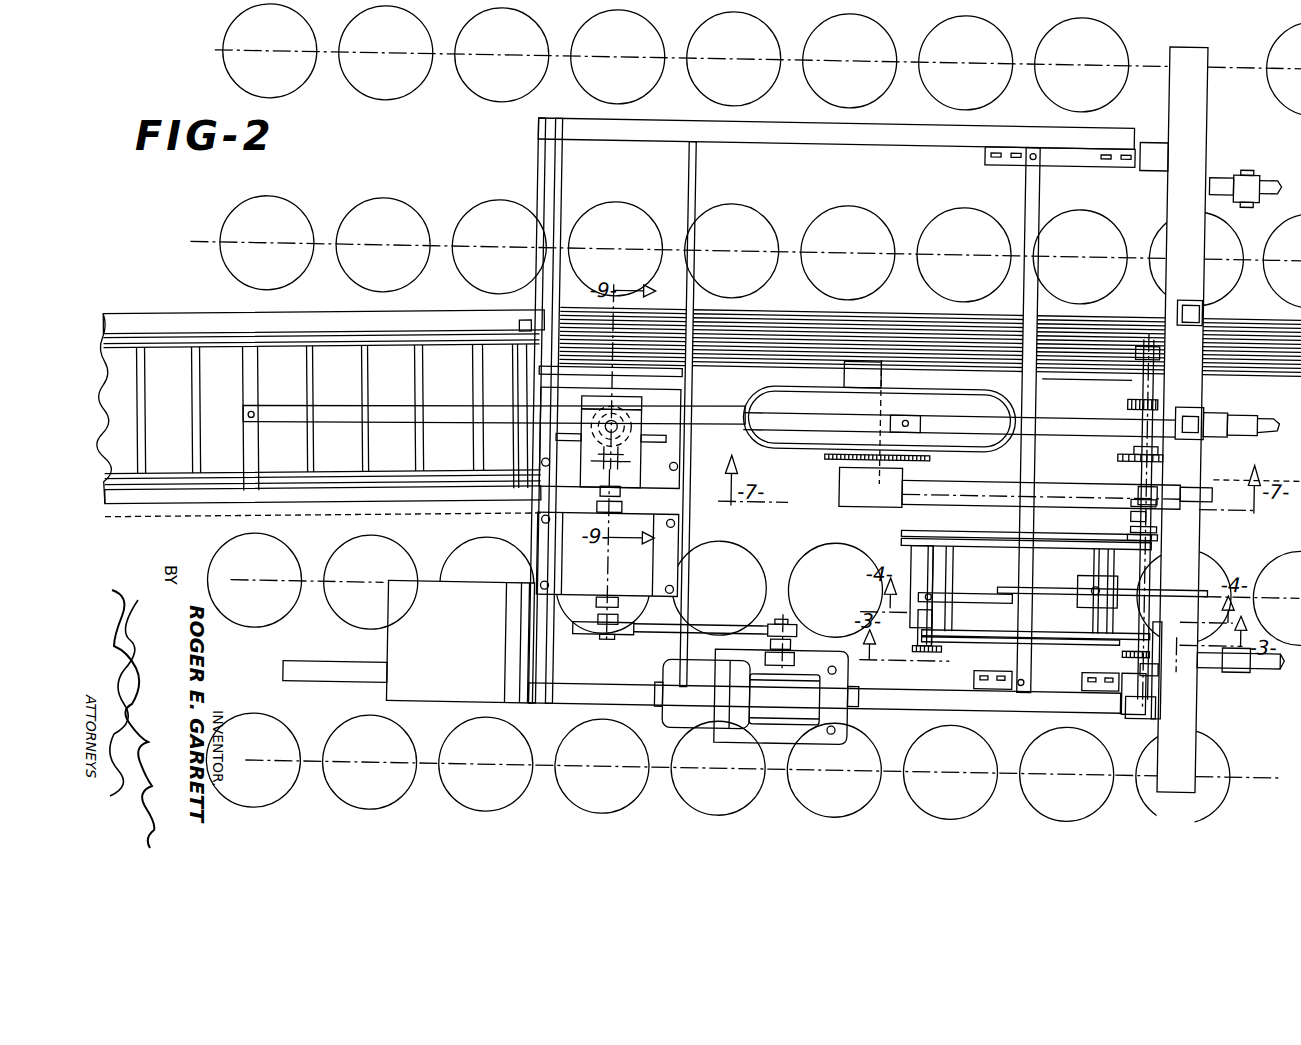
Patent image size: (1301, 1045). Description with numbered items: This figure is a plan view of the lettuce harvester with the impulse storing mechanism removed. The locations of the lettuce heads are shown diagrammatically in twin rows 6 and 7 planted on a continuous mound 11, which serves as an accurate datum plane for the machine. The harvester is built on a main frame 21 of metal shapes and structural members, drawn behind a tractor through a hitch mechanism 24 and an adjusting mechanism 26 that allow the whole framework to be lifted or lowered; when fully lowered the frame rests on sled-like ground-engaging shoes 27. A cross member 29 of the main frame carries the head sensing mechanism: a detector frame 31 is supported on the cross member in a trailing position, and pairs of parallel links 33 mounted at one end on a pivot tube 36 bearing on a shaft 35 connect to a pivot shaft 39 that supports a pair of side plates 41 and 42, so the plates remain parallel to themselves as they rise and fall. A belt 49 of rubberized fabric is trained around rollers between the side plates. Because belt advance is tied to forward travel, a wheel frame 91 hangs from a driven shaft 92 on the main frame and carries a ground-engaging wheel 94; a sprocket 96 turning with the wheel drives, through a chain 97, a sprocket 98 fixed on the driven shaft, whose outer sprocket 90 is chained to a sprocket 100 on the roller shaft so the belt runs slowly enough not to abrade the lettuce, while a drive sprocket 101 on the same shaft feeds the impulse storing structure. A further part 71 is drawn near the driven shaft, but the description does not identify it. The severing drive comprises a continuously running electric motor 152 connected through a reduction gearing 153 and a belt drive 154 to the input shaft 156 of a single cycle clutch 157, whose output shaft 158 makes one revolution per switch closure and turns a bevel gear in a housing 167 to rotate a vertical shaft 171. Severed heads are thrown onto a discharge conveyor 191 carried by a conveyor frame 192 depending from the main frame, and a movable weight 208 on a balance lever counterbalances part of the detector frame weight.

The row 6 is at (395, 218).
The row 7 is at (358, 104).
The mound 11 is at (920, 337).
The main frame 21 is at (842, 133).
The hitch mechanism 24 is at (1266, 176).
The adjusting mechanism 26 is at (1272, 418).
The ground-engaging shoes 27 is at (312, 660).
The cross member 29 is at (1203, 728).
The detector frame 31 is at (902, 539).
The parallel links 33 is at (1132, 533).
The shaft 35 is at (1150, 494).
The pivot tube 36 is at (1138, 630).
The pivot shaft 39 is at (914, 652).
The side plate 41 is at (1038, 550).
The side plate 42 is at (1056, 632).
The belt 49 is at (1031, 597).
The sprocket 71 is at (1128, 535).
The sprocket 90 is at (1152, 650).
The wheel frame 91 is at (1066, 372).
The driven shaft 92 is at (1144, 338).
The ground-engaging wheel 94 is at (958, 398).
The sprocket 96 is at (818, 453).
The chain 97 is at (1082, 462).
The sprocket 98 is at (1160, 470).
The sprocket 100 is at (943, 655).
The drive sprocket 101 is at (1128, 390).
The electric motor 152 is at (698, 720).
The reduction gearing 153 is at (816, 706).
The belt drive 154 is at (742, 616).
The input shaft 156 is at (606, 638).
The single cycle clutch 157 is at (608, 554).
The output shaft 158 is at (630, 498).
The housing 167 is at (640, 405).
The vertical shaft 171 is at (681, 437).
The discharge conveyor 191 is at (178, 340).
The conveyor frame 192 is at (290, 340).
The weight 208 is at (1120, 598).